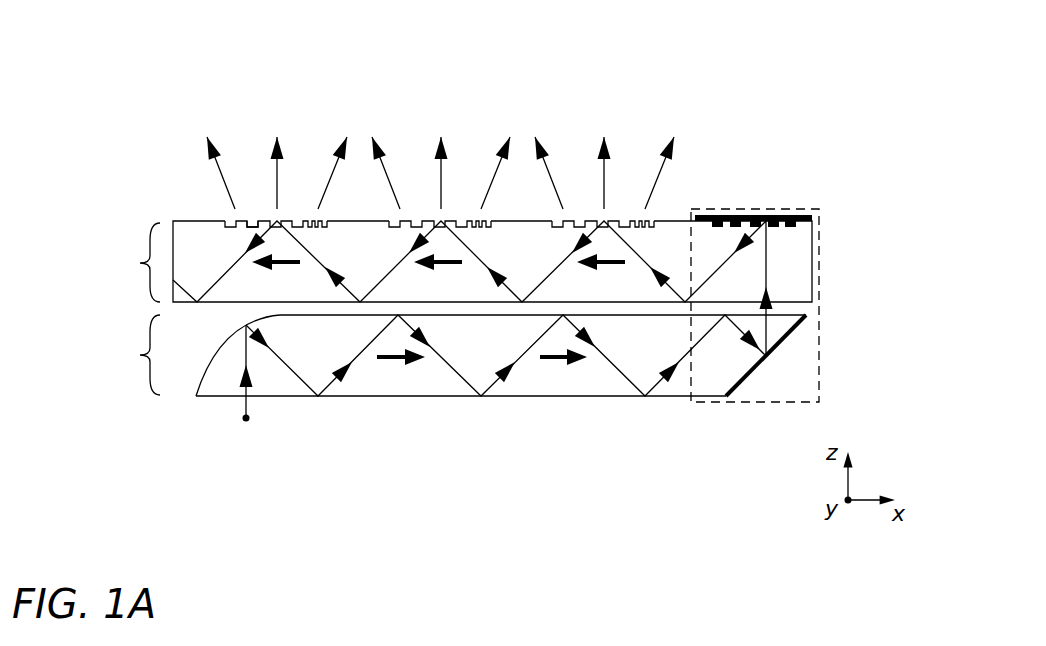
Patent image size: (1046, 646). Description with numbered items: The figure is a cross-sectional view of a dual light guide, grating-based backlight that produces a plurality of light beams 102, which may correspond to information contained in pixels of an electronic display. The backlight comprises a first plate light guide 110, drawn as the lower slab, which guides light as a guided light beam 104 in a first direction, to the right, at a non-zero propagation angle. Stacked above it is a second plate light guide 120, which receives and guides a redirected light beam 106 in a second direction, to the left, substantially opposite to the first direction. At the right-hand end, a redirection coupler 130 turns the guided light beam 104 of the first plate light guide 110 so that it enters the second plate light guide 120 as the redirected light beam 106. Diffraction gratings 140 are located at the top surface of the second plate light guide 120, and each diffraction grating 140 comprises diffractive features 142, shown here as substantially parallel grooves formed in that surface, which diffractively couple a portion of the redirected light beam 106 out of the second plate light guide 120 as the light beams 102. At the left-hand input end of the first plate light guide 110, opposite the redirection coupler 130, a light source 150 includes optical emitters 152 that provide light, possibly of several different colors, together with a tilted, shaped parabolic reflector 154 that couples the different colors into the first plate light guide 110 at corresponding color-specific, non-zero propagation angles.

The light beams 102 is at (699, 151).
The guided light beam 104 is at (451, 373).
The redirected light beam 106 is at (539, 262).
The first plate light guide 110 is at (442, 355).
The second plate light guide 120 is at (445, 261).
The redirection coupler 130 is at (803, 200).
The diffraction grating 140 is at (232, 216).
The diffractive features 142 is at (257, 216).
The light source 150 is at (222, 444).
The optical emitters 152 is at (246, 420).
The tilted, shaped parabolic reflector 154 is at (220, 369).